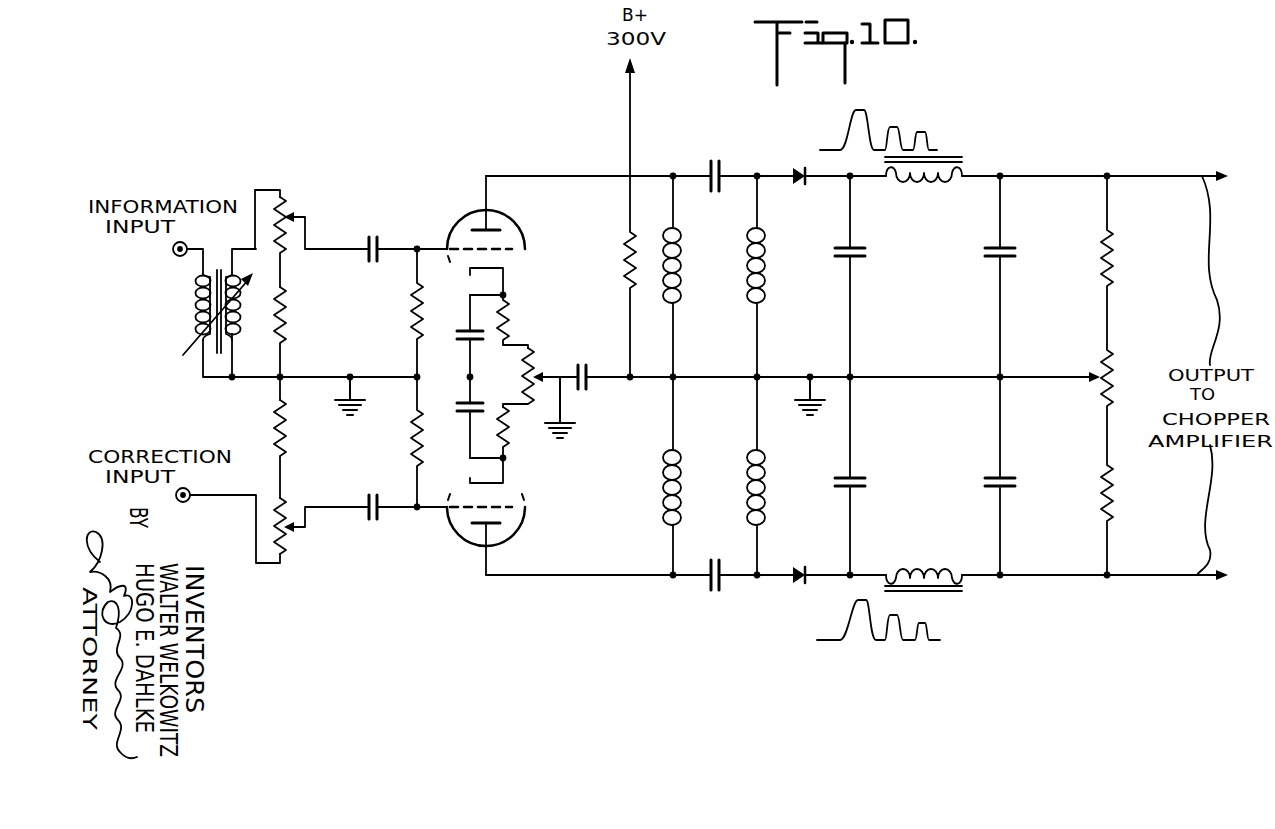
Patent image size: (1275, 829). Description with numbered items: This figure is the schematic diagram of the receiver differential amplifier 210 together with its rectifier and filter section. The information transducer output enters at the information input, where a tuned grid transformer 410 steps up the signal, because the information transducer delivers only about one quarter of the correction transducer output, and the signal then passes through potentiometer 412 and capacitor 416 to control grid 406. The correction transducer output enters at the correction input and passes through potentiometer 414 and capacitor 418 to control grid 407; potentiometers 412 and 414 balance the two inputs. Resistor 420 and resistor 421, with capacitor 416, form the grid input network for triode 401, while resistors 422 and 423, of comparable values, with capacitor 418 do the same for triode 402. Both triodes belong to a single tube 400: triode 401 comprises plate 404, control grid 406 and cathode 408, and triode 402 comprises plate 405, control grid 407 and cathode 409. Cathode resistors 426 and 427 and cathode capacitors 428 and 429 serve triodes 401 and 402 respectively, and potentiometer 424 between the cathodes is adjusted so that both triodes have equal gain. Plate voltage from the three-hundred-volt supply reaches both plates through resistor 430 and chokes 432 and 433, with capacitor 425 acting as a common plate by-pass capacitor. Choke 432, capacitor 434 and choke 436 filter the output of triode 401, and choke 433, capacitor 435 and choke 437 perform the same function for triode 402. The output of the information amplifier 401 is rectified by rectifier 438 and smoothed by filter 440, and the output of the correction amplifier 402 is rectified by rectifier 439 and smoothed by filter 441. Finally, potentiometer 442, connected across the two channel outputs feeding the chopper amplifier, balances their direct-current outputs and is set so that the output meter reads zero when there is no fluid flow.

The receiver differential amplifier 210 is at (432, 131).
The tube 400 is at (546, 372).
The triode 401 is at (502, 237).
The triode 402 is at (502, 520).
The plate 404 is at (476, 229).
The plate 405 is at (478, 530).
The control grid 406 is at (492, 249).
The control grid 407 is at (510, 506).
The cathode 408 is at (487, 268).
The cathode 409 is at (510, 483).
The tuned grid transformer 410 is at (198, 305).
The potentiometer 412 is at (284, 194).
The potentiometer 414 is at (277, 511).
The capacitor 416 is at (375, 236).
The capacitor 418 is at (372, 521).
The resistor 420 is at (283, 310).
The resistor 421 is at (415, 300).
The resistor 422 is at (283, 425).
The resistor 423 is at (415, 445).
The potentiometer 424 is at (533, 368).
The capacitor 425 is at (586, 390).
The cathode resistor 426 is at (509, 320).
The cathode resistor 427 is at (510, 428).
The cathode capacitor 428 is at (458, 334).
The cathode capacitor 429 is at (457, 407).
The resistor 430 is at (629, 255).
The choke 432 is at (678, 270).
The choke 433 is at (677, 460).
The capacitor 434 is at (710, 169).
The capacitor 435 is at (716, 592).
The choke 436 is at (763, 258).
The choke 437 is at (763, 490).
The rectifier 438 is at (797, 168).
The rectifier 439 is at (798, 568).
The filter 440 is at (942, 327).
The filter 441 is at (942, 447).
The potentiometer 442 is at (1110, 356).